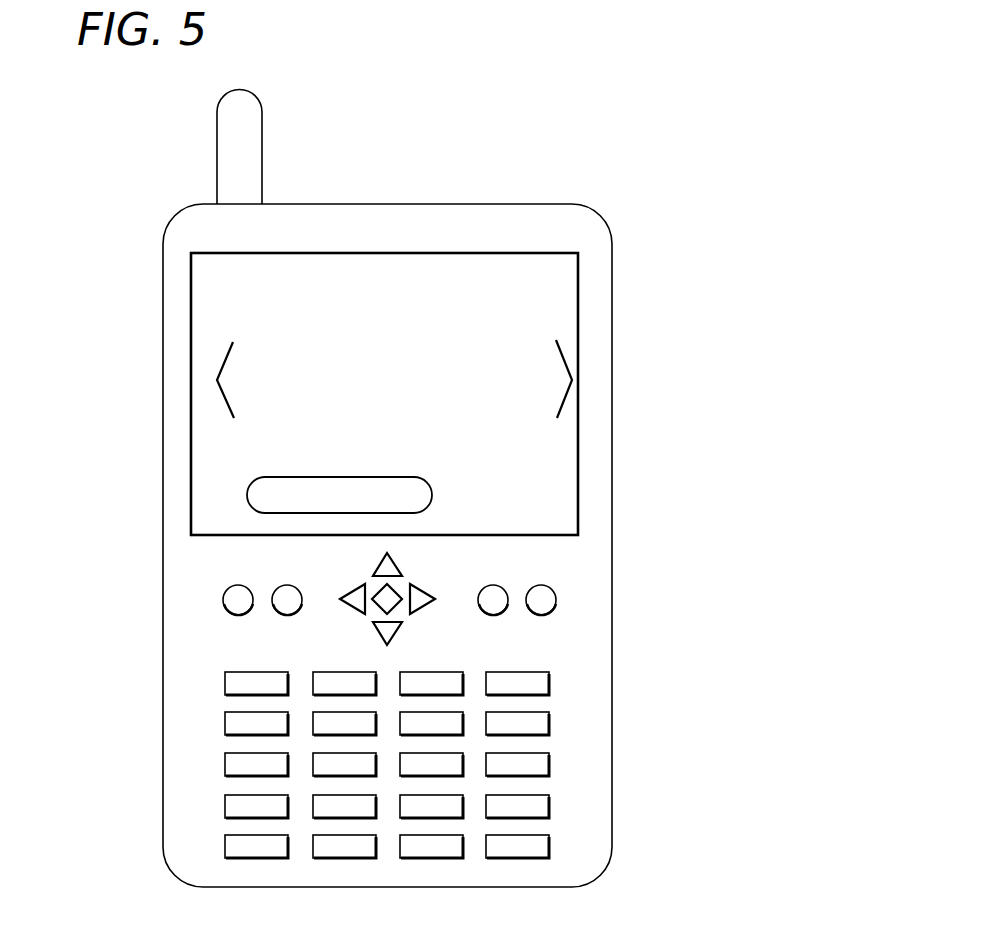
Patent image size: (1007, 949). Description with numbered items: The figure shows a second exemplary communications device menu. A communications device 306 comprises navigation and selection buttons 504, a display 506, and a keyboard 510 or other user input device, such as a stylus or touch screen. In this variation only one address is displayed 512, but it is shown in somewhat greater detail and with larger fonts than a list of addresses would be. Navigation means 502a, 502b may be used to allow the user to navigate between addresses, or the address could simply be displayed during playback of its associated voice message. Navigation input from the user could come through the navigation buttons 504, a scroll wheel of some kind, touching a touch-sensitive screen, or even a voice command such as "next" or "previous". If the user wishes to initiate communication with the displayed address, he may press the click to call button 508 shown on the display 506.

The communications device 306 is at (613, 808).
The navigation means 502a is at (221, 364).
The navigation means 502b is at (574, 360).
The navigation and selection buttons 504 is at (425, 596).
The display 506 is at (578, 414).
The click to call button 508 is at (247, 496).
The keyboard 510 is at (553, 677).
The displayed address 512 is at (394, 270).